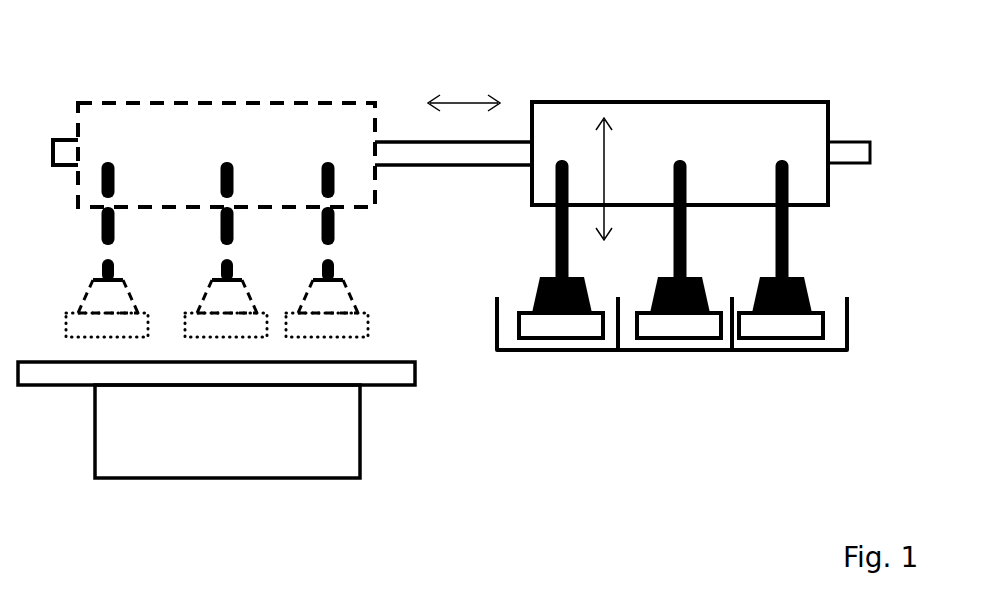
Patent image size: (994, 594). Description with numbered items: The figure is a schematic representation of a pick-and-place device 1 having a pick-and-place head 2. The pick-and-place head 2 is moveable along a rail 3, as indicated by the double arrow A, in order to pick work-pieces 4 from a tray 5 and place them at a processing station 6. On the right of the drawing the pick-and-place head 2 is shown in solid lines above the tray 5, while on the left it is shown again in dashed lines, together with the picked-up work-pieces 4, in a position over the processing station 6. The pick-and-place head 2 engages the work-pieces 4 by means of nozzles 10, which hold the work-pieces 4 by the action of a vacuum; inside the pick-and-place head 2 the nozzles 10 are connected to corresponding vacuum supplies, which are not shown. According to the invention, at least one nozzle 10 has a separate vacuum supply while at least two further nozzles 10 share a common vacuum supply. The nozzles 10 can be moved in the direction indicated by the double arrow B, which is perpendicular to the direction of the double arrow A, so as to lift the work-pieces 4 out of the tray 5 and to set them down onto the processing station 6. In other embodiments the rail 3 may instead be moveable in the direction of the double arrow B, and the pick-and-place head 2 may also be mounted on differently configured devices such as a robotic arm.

The pick-and-place device 1 is at (810, 398).
The pick-and-place head 2 is at (828, 117).
The rail 3 is at (403, 140).
The work-pieces 4 is at (820, 317).
The tray 5 is at (528, 352).
The processing station 6 is at (235, 447).
The nozzles 10 is at (807, 280).
The double arrow A is at (466, 102).
The double arrow B is at (608, 150).